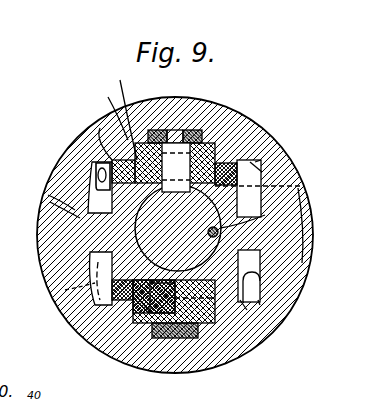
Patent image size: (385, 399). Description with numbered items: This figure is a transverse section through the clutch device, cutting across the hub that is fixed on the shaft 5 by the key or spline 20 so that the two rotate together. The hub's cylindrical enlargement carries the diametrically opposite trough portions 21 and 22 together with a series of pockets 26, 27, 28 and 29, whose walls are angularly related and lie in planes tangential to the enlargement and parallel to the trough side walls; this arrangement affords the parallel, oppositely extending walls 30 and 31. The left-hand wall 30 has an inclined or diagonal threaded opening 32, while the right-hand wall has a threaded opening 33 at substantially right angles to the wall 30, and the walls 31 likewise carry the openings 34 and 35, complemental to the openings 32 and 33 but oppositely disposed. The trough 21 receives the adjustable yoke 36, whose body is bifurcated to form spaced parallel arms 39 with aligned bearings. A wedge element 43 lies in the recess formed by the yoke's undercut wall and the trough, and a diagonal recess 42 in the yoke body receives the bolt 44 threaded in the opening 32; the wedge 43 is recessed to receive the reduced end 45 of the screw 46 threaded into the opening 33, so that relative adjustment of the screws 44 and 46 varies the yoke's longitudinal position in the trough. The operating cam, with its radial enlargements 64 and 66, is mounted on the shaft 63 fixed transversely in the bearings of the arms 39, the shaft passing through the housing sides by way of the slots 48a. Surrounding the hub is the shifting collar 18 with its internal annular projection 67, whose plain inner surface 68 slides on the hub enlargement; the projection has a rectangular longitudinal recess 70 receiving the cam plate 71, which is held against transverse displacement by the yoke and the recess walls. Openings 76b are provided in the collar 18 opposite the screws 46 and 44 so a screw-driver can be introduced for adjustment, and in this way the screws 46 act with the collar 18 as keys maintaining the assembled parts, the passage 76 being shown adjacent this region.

The shaft 5 is at (60, 228).
The shifting collar 18 is at (298, 188).
The key or spline 20 is at (220, 233).
The trough portion 21 is at (123, 165).
The trough portion 22 is at (150, 315).
The pocket 26 is at (48, 195).
The pocket 27 is at (248, 188).
The pocket 28 is at (113, 294).
The pocket 29 is at (262, 277).
The wall 30 is at (255, 108).
The wall 31 is at (135, 295).
The threaded opening 32 is at (100, 128).
The threaded opening 33 is at (250, 162).
The opening 34 is at (260, 305).
The opening 35 is at (62, 258).
The adjustable yoke 36 is at (198, 330).
The arm 39 is at (121, 112).
The diagonal recess 42 is at (230, 338).
The wedge element 43 is at (168, 338).
The bolt 44 is at (93, 173).
The reduced end 45 is at (165, 335).
The screw 46 is at (255, 162).
The slot 48a is at (225, 168).
The shaft 63 is at (230, 182).
The radial enlargement 64 is at (176, 137).
The radial enlargement 66 is at (185, 148).
The internal annular projection 67 is at (265, 215).
The inner surface 68 is at (50, 202).
The longitudinal recess 70 is at (198, 180).
The cam plate 71 is at (163, 150).
The passage 76 is at (262, 186).
The opening 76b is at (65, 290).